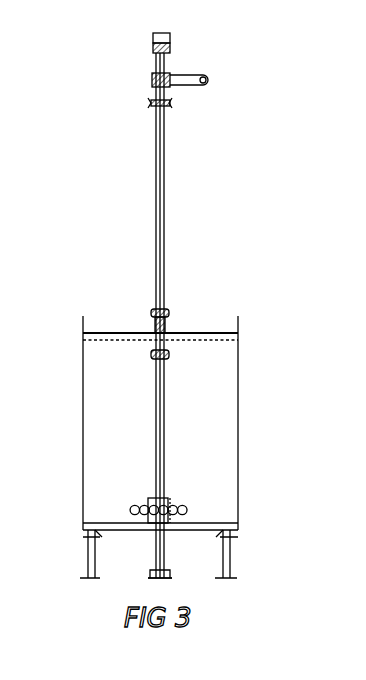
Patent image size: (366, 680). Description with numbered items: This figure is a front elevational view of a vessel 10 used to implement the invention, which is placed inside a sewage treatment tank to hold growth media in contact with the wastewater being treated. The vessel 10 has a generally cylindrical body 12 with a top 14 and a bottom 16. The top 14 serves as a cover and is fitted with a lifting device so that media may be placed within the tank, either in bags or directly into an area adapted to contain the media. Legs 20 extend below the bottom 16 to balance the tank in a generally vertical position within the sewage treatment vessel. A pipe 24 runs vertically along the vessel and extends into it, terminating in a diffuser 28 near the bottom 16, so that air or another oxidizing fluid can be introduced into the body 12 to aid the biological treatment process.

The vessel 10 is at (262, 420).
The cylindrical body 12 is at (82, 382).
The top 14 is at (128, 330).
The bottom 16 is at (188, 533).
The legs 20 is at (81, 545).
The pipe 24 is at (170, 193).
The diffuser 28 is at (190, 509).